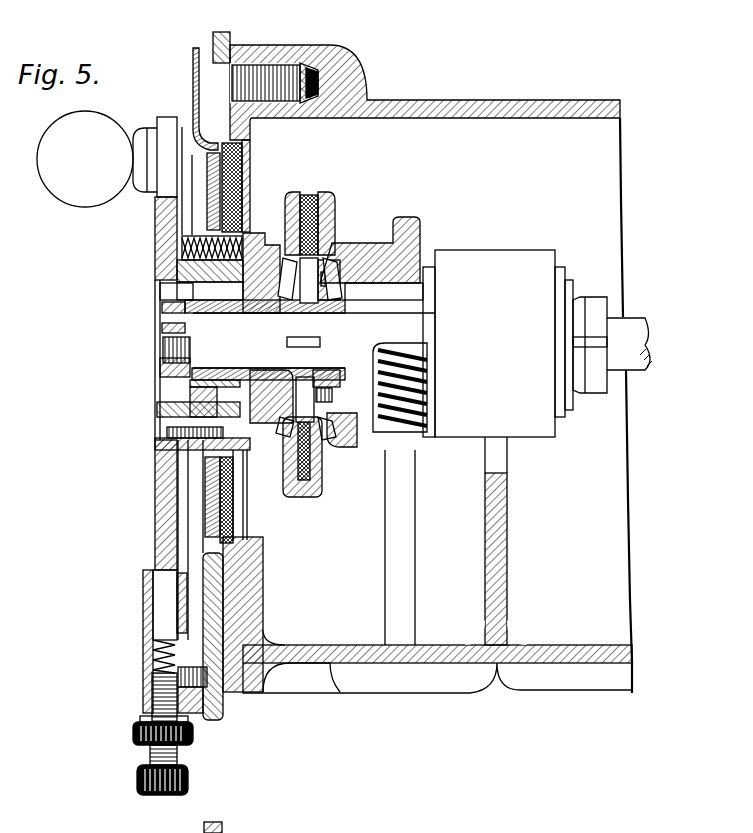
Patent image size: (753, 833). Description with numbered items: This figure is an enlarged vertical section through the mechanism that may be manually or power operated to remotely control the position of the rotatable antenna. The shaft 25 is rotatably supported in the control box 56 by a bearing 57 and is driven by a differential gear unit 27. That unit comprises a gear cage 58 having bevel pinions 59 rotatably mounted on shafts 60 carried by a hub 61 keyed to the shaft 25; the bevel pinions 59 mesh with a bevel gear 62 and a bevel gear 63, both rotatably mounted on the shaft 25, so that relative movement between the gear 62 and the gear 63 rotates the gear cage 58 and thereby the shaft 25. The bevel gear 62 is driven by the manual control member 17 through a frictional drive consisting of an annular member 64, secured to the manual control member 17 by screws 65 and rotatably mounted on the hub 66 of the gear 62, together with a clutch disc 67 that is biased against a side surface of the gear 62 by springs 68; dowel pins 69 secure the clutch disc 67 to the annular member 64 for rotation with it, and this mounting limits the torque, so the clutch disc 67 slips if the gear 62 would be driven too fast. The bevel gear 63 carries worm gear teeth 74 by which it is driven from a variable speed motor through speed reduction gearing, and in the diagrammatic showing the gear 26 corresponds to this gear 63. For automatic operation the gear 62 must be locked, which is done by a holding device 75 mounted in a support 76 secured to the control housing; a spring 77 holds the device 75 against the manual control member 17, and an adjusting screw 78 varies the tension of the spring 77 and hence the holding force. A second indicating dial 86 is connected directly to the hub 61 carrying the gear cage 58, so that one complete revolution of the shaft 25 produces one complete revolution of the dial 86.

The second indicating dial 86 is at (193, 99).
The springs 68 is at (181, 244).
The manual control member 17 is at (156, 266).
The clutch disc 67 is at (190, 292).
The bevel gear 62 is at (256, 233).
The gear cage 58 is at (326, 203).
The bevel pinions 59 is at (316, 226).
The shafts 60 is at (318, 246).
The bevel gear 63 is at (372, 252).
The worm gear teeth 74 is at (404, 221).
The gear 26 is at (417, 238).
The bearing 57 is at (531, 250).
The shaft 25 is at (400, 333).
The hub 61 is at (288, 313).
The hub 66 is at (210, 370).
The annular member 64 is at (158, 421).
The screws 65 is at (156, 444).
The dowel pins 69 is at (246, 447).
The differential gear unit 27 is at (325, 432).
The holding device 75 is at (180, 612).
The support 76 is at (151, 661).
The spring 77 is at (151, 673).
The adjusting screw 78 is at (188, 778).
The control box 56 is at (378, 665).